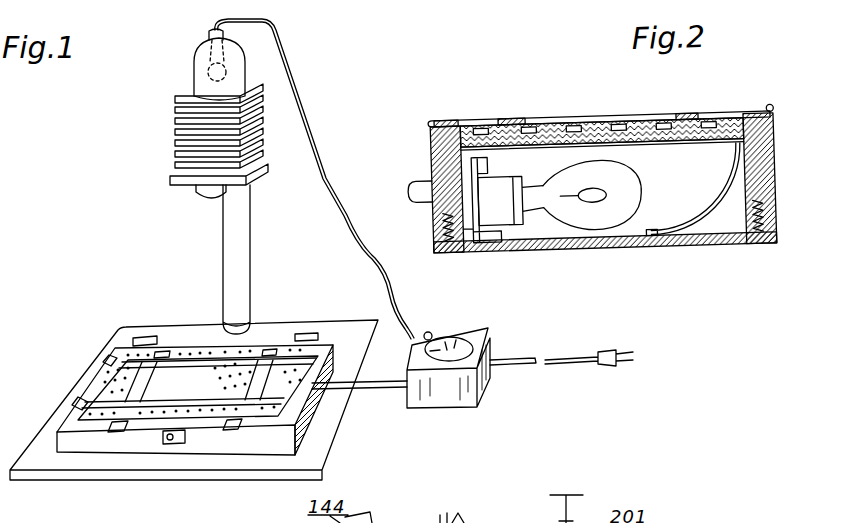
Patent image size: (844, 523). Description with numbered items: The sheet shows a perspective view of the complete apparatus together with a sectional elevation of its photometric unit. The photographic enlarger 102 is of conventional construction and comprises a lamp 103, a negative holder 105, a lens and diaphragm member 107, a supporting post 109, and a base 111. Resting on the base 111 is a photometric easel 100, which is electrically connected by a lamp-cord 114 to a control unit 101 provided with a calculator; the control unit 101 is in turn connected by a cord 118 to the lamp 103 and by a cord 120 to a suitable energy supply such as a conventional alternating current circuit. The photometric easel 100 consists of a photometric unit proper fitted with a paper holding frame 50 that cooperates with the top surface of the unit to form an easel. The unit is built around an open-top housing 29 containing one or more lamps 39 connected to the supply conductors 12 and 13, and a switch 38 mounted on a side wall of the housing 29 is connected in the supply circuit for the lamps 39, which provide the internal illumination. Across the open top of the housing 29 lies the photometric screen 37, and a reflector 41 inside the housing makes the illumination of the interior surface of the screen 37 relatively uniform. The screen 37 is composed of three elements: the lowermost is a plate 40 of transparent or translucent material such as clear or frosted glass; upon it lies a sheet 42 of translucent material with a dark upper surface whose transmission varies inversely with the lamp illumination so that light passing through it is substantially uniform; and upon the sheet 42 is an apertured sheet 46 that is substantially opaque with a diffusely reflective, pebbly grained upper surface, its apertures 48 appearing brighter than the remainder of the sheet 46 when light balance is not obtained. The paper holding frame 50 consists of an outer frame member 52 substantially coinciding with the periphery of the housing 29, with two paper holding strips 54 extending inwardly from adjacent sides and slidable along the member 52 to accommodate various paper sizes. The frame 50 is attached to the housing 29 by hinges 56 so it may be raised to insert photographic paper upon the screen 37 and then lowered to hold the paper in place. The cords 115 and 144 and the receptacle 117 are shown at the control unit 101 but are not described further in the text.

In FIG. 2, the supply conductor 12 is at (488, 160).
In FIG. 2, the supply conductor 13 is at (495, 234).
In FIG. 1, the open-top housing 29 is at (68, 442).
In FIG. 2, the open-top housing 29 is at (431, 135).
In FIG. 1, the photometric screen 37 is at (108, 356).
In FIG. 2, the photometric screen 37 is at (618, 119).
In FIG. 1, the switch 38 is at (168, 446).
In FIG. 2, the lamp 39 is at (632, 183).
In FIG. 2, the transparent or translucent sheet 40 is at (720, 143).
In FIG. 2, the reflector 41 is at (700, 236).
In FIG. 2, the translucent sheet 42 is at (692, 144).
In FIG. 2, the apertured sheet 46 is at (582, 124).
In FIG. 2, the aperture 48 is at (560, 122).
In FIG. 1, the paper holding frame 50 is at (74, 406).
In FIG. 2, the paper holding frame 50 is at (525, 107).
In FIG. 1, the outer frame member 52 is at (300, 365).
In FIG. 2, the outer frame member 52 is at (753, 102).
In FIG. 1, the paper holding strip 54 is at (303, 358).
In FIG. 2, the paper holding strip 54 is at (505, 118).
In FIG. 1, the hinge 56 is at (147, 337).
In FIG. 2, the hinge 56 is at (774, 110).
In FIG. 1, the photometric easel 100 is at (207, 402).
In FIG. 2, the photometric easel 100 is at (712, 105).
In FIG. 1, the control unit 101 is at (461, 408).
In FIG. 1, the photographic enlarger 102 is at (184, 63).
In FIG. 1, the lamp 103 is at (207, 70).
In FIG. 1, the negative holder 105 is at (176, 104).
In FIG. 1, the lens and diaphragm member 107 is at (195, 195).
In FIG. 1, the supporting post 109 is at (238, 212).
In FIG. 1, the base 111 is at (76, 386).
In FIG. 1, the lamp-cord 114 is at (371, 389).
In FIG. 2, the lamp-cord 114 is at (414, 176).
In FIG. 1, the cord 115 is at (498, 351).
In FIG. 1, the receptacle 117 is at (461, 338).
In FIG. 1, the cord 118 is at (319, 153).
In FIG. 1, the cord 120 is at (553, 365).
In FIG. 1, the pilot light 144 is at (430, 331).